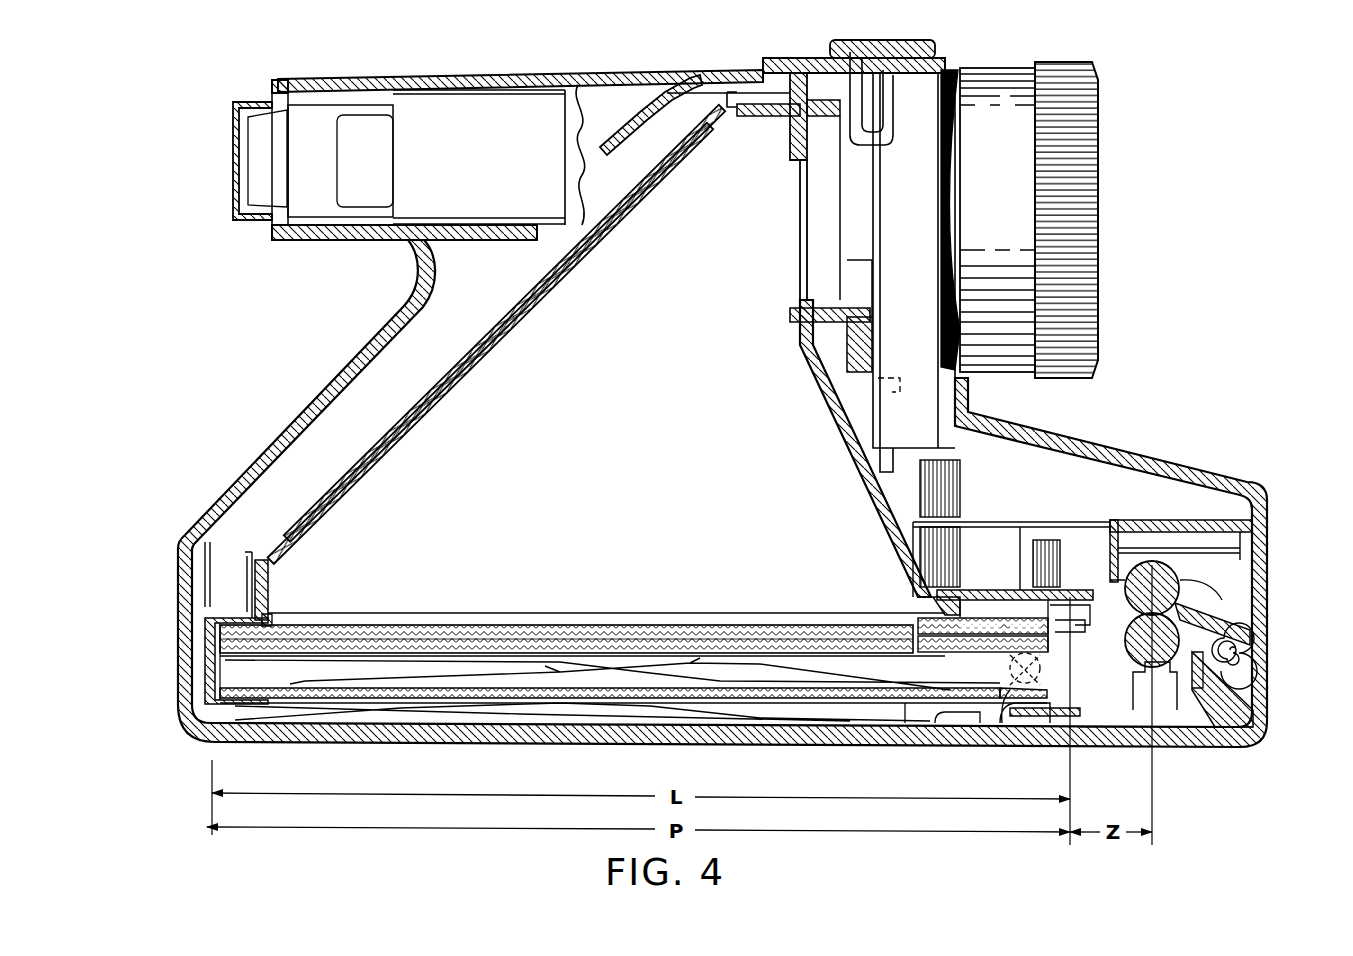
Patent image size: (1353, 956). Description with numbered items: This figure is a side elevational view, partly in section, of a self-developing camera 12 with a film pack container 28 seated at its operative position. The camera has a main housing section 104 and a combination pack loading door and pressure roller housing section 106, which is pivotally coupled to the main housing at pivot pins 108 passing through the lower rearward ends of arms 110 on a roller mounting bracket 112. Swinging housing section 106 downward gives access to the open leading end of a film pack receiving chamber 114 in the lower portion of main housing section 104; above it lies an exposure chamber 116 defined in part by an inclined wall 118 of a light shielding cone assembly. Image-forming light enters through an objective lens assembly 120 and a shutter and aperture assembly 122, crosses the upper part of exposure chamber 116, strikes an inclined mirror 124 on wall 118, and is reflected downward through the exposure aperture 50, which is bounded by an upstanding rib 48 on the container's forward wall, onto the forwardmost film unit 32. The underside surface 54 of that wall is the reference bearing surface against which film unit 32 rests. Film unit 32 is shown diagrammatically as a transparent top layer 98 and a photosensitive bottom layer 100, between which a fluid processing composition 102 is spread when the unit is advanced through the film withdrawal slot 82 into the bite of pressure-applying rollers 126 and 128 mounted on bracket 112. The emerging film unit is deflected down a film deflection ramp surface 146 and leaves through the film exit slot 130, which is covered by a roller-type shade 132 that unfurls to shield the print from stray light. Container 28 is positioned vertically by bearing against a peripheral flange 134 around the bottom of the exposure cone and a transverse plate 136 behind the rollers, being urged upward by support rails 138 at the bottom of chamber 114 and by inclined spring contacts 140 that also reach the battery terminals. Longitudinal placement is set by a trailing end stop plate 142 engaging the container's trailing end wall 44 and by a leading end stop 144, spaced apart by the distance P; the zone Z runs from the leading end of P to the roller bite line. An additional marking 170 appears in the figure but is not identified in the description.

The self-developing camera 12 is at (1145, 190).
The container 28 is at (637, 702).
The film unit 32 is at (533, 612).
The trailing end wall 44 is at (197, 703).
The rib 48 is at (275, 614).
The film exposure aperture 50 is at (378, 622).
The underside surface 54 is at (312, 625).
The film withdrawal slot 82 is at (1068, 628).
The top layer 98 is at (604, 622).
The bottom layer 100 is at (680, 620).
The fluid processing composition 102 is at (1007, 597).
The main housing section 104 is at (388, 333).
The pack loading door and pressure roller housing section 106 is at (1260, 752).
The pivot pins 108 is at (945, 735).
The arms 110 is at (1020, 687).
The roller mounting bracket 112 is at (1210, 727).
The film pack receiving chamber 114 is at (248, 702).
The exposure chamber 116 is at (503, 387).
The inclined wall 118 is at (625, 210).
The objective lens assembly 120 is at (1020, 66).
The shutter and aperture assembly 122 is at (930, 165).
The inclined mirror 124 is at (620, 228).
The pressure-applying roller 126 is at (1152, 562).
The pressure-applying roller 128 is at (1132, 648).
The film exit slot 130 is at (1268, 650).
The roller-type shade 132 is at (1262, 668).
The peripheral flange 134 is at (243, 597).
The transverse plate 136 is at (1070, 560).
The support rails 138 is at (910, 718).
The spring contacts 140 is at (450, 707).
The trailing end stop plate 142 is at (205, 650).
The leading end stop 144 is at (1078, 710).
The film deflection ramp surface 146 is at (1172, 660).
The reference plane 170 is at (1087, 721).